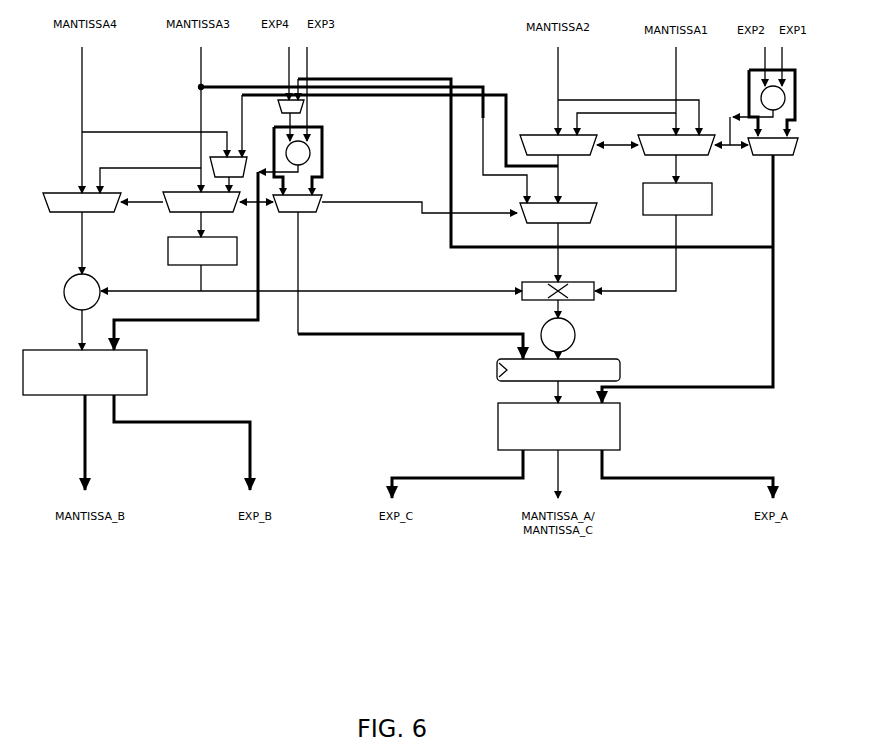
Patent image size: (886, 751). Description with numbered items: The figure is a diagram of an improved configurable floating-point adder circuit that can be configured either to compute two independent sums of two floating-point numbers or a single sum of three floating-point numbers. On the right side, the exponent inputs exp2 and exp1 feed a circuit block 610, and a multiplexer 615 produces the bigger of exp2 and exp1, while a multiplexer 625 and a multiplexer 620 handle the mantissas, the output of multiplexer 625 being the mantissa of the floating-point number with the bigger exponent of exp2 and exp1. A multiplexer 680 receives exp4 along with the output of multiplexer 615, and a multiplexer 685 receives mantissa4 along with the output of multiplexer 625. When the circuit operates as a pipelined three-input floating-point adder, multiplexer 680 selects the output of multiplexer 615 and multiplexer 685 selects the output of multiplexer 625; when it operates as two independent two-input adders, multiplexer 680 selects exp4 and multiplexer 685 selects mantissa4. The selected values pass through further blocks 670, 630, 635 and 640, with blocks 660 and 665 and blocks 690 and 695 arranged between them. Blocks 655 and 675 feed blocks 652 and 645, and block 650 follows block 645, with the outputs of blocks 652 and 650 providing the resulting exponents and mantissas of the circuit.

The exponent adder/subtractor 610 is at (786, 95).
The multiplexer 615 is at (773, 146).
The mantissa multiplexer 620 is at (676, 159).
The multiplexer 625 is at (558, 169).
The multiplexer 630 is at (297, 203).
The multiplexer 635 is at (201, 214).
The multiplexer 640 is at (82, 233).
The register 645 is at (558, 381).
The normalization/output block 650 is at (582, 450).
The output block 652 is at (136, 420).
The adder/subtractor 655 is at (66, 283).
The shifter 660 is at (166, 246).
The shifter 665 is at (713, 200).
The exponent adder/subtractor 670 is at (311, 150).
The adder/subtractor 675 is at (576, 330).
The multiplexer 680 is at (305, 106).
The multiplexer 685 is at (228, 174).
The multiplexer 690 is at (558, 242).
The 3:2 compressor 695 is at (580, 281).